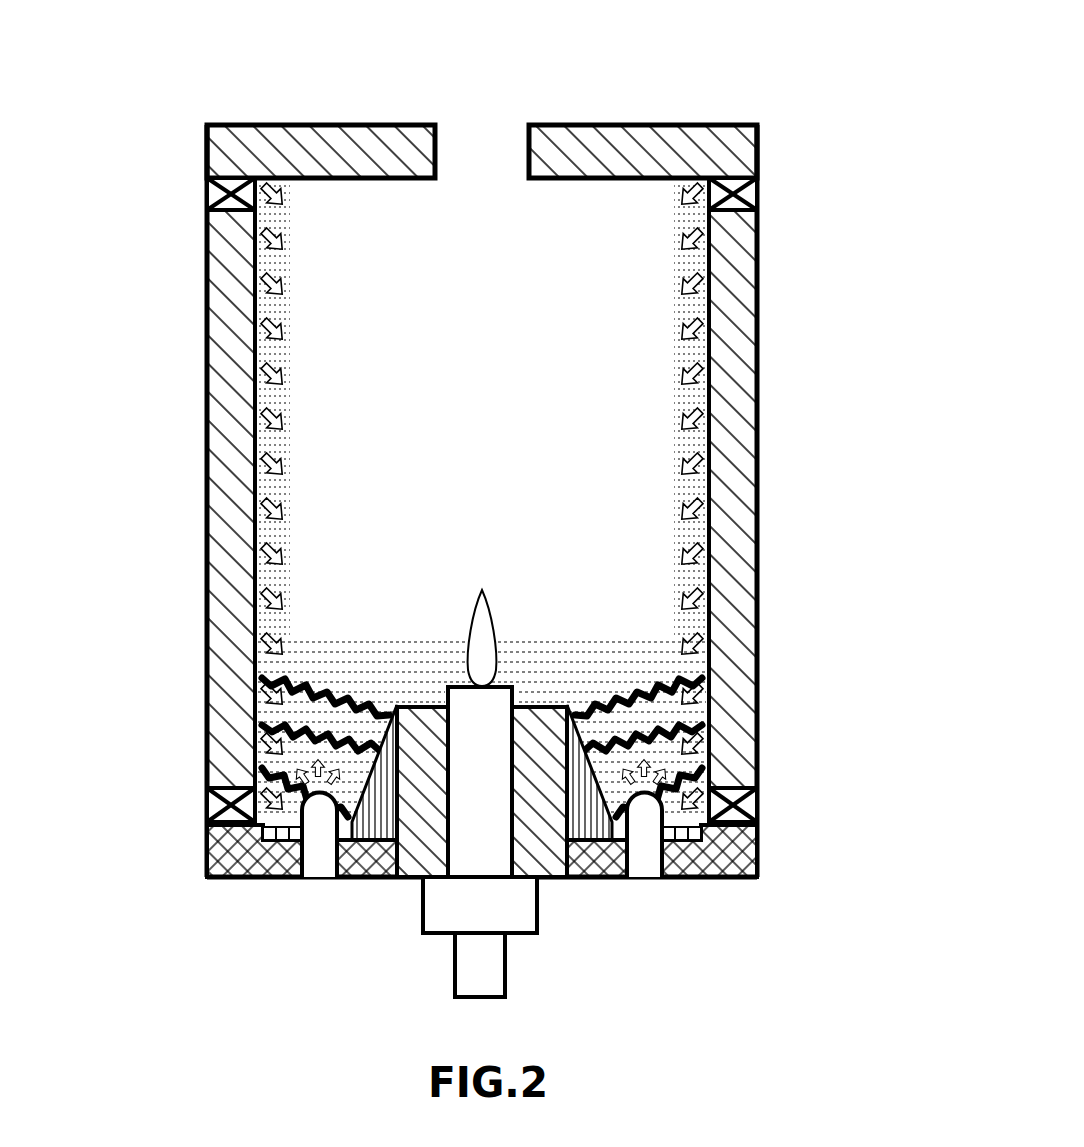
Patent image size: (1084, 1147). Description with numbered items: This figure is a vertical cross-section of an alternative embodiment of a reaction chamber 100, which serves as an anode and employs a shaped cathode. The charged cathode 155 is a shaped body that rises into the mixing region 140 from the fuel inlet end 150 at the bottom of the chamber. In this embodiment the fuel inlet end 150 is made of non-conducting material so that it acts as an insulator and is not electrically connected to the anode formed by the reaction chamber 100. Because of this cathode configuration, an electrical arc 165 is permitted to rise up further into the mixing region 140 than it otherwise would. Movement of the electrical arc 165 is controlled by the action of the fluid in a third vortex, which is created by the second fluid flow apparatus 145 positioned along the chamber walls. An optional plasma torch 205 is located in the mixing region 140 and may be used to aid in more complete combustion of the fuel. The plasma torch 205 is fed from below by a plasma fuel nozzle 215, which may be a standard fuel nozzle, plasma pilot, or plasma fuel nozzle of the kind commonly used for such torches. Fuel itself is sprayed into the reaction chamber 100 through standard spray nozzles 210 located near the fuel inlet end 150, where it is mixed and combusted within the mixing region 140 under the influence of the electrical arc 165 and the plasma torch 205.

The reaction chamber 100 is at (158, 100).
The mixing region 140 is at (530, 682).
The second fluid flow apparatus 145 is at (745, 805).
The fuel inlet end 150 is at (730, 848).
The charged cathode 155 is at (583, 800).
The electrical arc 165 is at (340, 690).
The plasma torch 205 is at (482, 638).
The spray nozzles 210 is at (638, 835).
The plasma fuel nozzle 215 is at (482, 906).